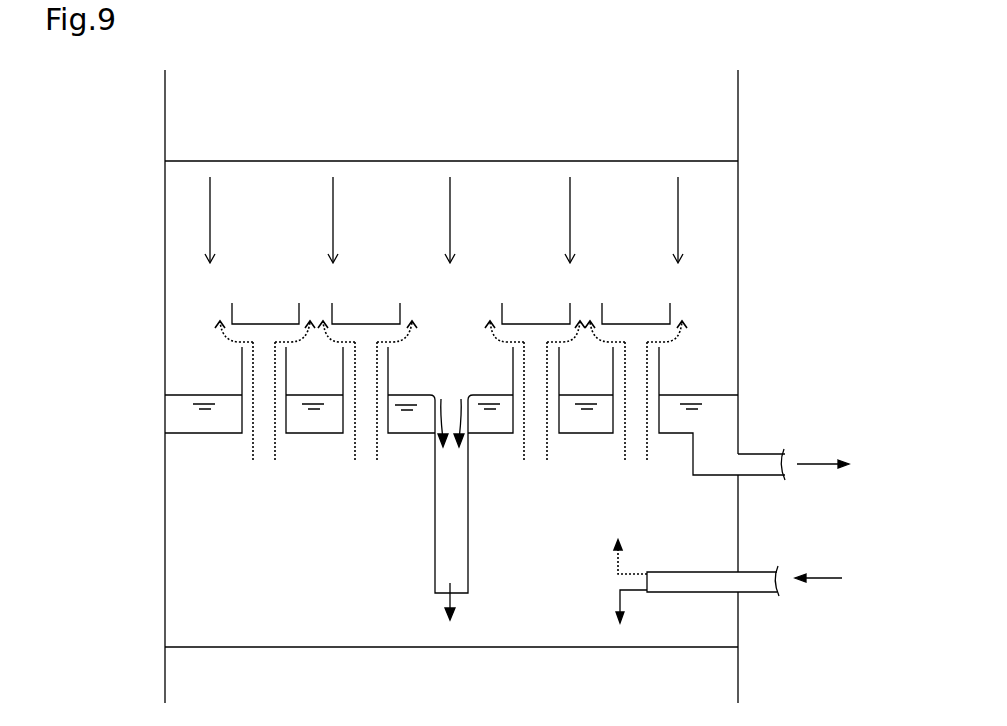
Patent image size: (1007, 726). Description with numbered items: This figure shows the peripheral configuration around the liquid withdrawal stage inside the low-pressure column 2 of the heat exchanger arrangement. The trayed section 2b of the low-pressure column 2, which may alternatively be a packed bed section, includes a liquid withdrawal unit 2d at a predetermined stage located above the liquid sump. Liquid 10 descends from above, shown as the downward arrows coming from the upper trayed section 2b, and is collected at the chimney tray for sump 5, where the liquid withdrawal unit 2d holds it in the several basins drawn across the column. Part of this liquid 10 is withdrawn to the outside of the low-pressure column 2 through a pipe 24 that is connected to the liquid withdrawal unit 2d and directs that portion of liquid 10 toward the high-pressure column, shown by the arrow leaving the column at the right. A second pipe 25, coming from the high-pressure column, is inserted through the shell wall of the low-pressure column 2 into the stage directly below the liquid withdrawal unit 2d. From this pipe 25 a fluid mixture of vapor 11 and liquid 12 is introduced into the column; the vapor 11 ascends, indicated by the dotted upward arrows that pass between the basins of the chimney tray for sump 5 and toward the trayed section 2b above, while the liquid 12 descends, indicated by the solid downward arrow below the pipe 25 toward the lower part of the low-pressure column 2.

The low-pressure column 2 is at (742, 186).
The trayed section 2b is at (468, 128).
The liquid withdrawal unit 2d is at (706, 322).
The chimney tray for sump 5 is at (207, 433).
The liquid 10 is at (571, 216).
The vapor 11 is at (548, 442).
The liquid 12 is at (612, 602).
The pipe 24 is at (752, 453).
The pipe 25 is at (757, 592).